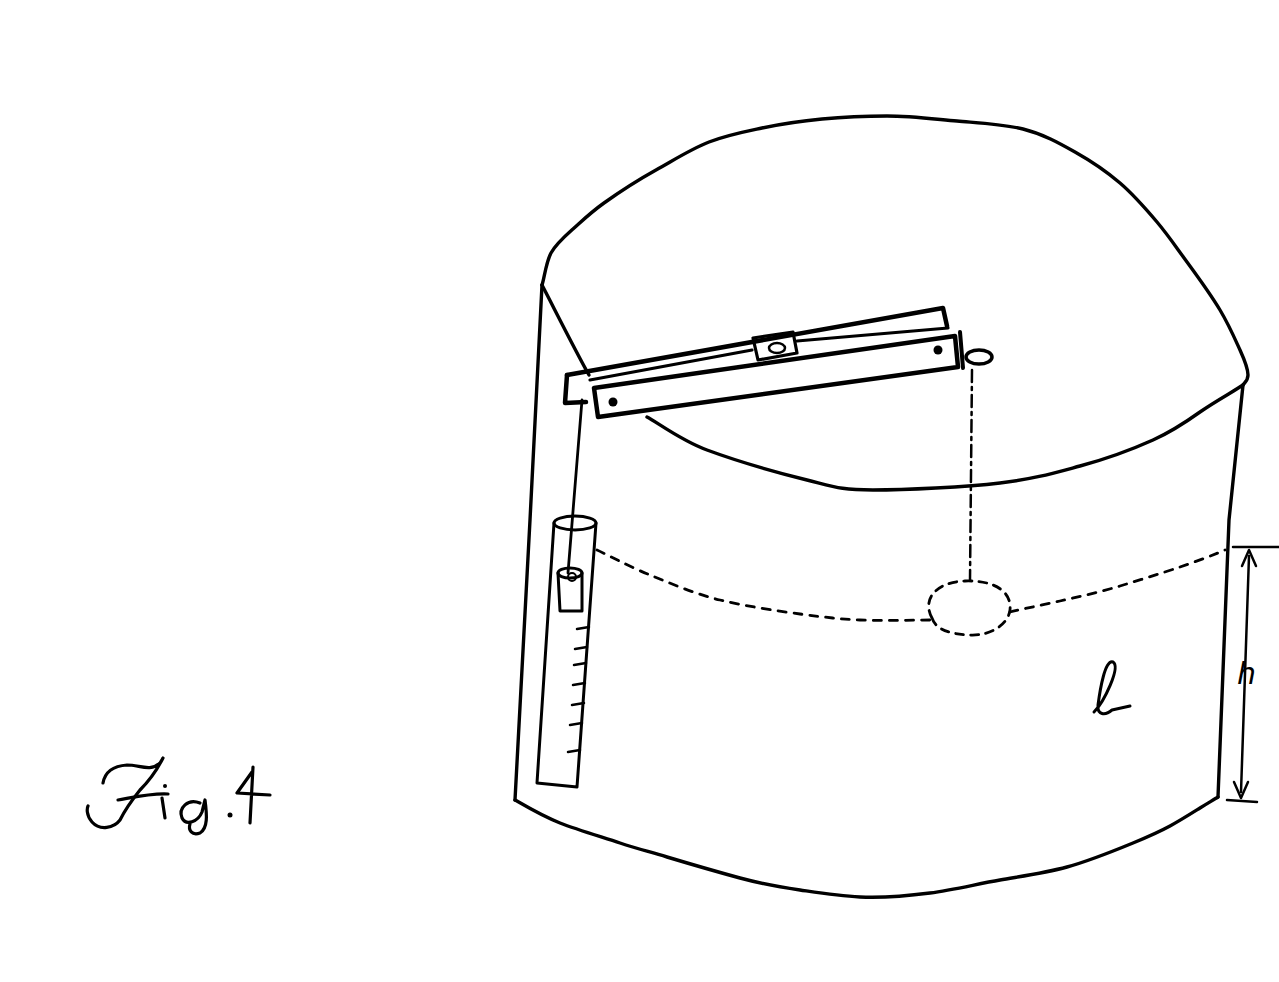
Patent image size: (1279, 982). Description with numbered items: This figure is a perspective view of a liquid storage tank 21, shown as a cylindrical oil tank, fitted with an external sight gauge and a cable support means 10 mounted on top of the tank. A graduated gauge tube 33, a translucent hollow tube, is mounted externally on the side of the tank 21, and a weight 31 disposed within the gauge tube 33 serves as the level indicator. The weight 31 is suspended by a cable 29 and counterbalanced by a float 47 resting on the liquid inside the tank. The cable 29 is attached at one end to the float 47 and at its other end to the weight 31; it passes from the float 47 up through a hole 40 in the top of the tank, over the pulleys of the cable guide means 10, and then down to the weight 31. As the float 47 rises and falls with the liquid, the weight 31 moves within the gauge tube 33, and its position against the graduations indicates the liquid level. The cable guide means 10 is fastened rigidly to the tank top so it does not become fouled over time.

The cable support means 10 is at (760, 378).
The liquid storage tank 21 is at (887, 147).
The cable 29 is at (573, 457).
The weight 31 is at (557, 593).
The gauge tube 33 is at (560, 707).
The hole 40 is at (993, 343).
The float 47 is at (972, 625).